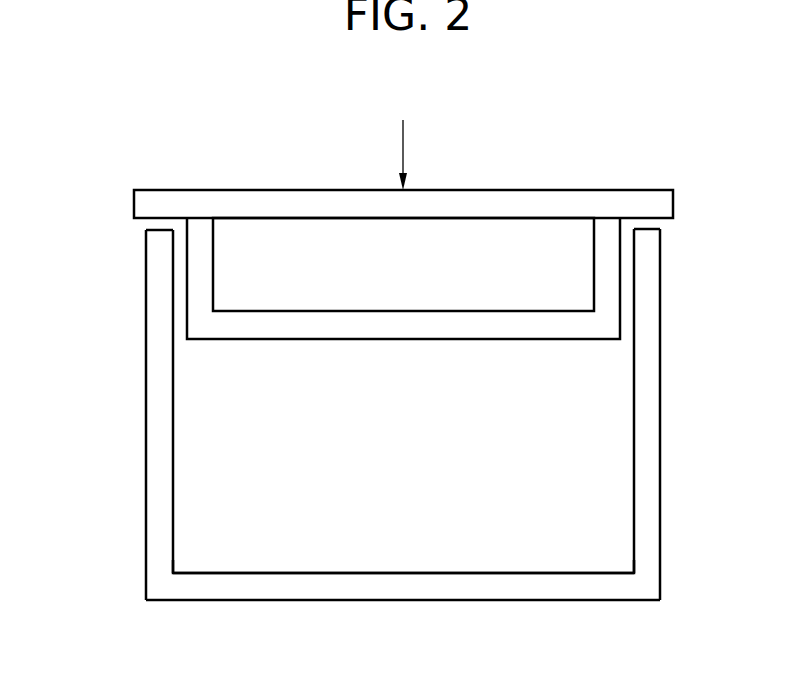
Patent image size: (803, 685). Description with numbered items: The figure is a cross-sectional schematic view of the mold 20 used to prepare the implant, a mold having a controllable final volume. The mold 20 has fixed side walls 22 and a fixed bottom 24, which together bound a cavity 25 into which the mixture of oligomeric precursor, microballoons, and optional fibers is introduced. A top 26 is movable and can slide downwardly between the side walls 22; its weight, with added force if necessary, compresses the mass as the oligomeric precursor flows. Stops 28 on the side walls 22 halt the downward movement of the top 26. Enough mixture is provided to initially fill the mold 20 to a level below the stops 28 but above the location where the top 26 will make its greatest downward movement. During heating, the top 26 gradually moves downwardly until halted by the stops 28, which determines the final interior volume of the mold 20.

The mold 20 is at (122, 416).
The side walls 22 is at (160, 548).
The bottom 24 is at (389, 589).
The cavity 25 is at (384, 468).
The top 26 is at (345, 325).
The stops 28 is at (157, 230).